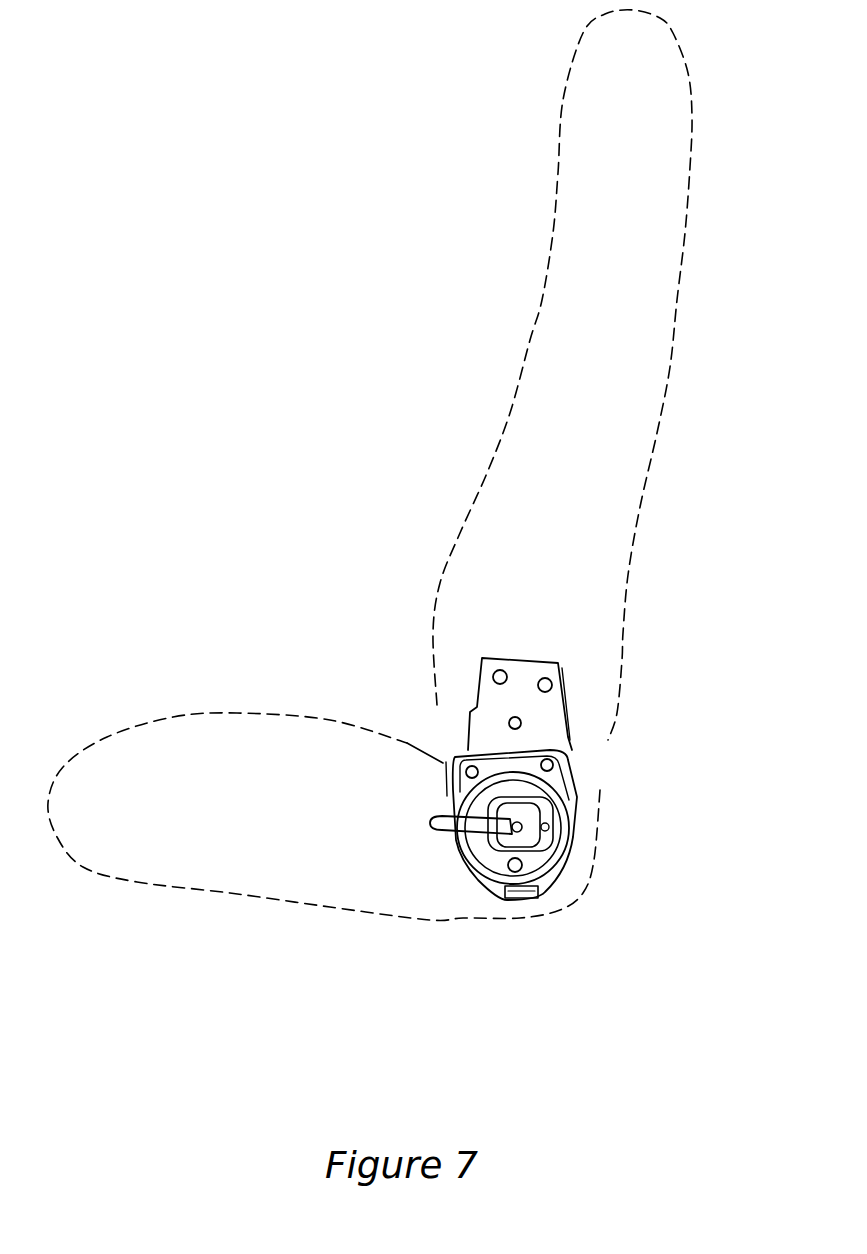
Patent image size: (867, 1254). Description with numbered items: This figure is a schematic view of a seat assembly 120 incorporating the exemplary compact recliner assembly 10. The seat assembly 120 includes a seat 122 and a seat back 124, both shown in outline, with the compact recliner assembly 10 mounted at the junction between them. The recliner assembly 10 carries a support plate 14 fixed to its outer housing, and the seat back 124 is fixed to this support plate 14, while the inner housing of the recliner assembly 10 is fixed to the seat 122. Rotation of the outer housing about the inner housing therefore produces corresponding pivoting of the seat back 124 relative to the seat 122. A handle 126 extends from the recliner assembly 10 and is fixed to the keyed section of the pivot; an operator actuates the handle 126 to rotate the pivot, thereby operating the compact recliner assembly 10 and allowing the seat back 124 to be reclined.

The compact recliner assembly 10 is at (524, 737).
The support plate 14 is at (553, 660).
The seat assembly 120 is at (370, 465).
The seat 122 is at (198, 727).
The seat back 124 is at (552, 283).
The handle 126 is at (440, 818).